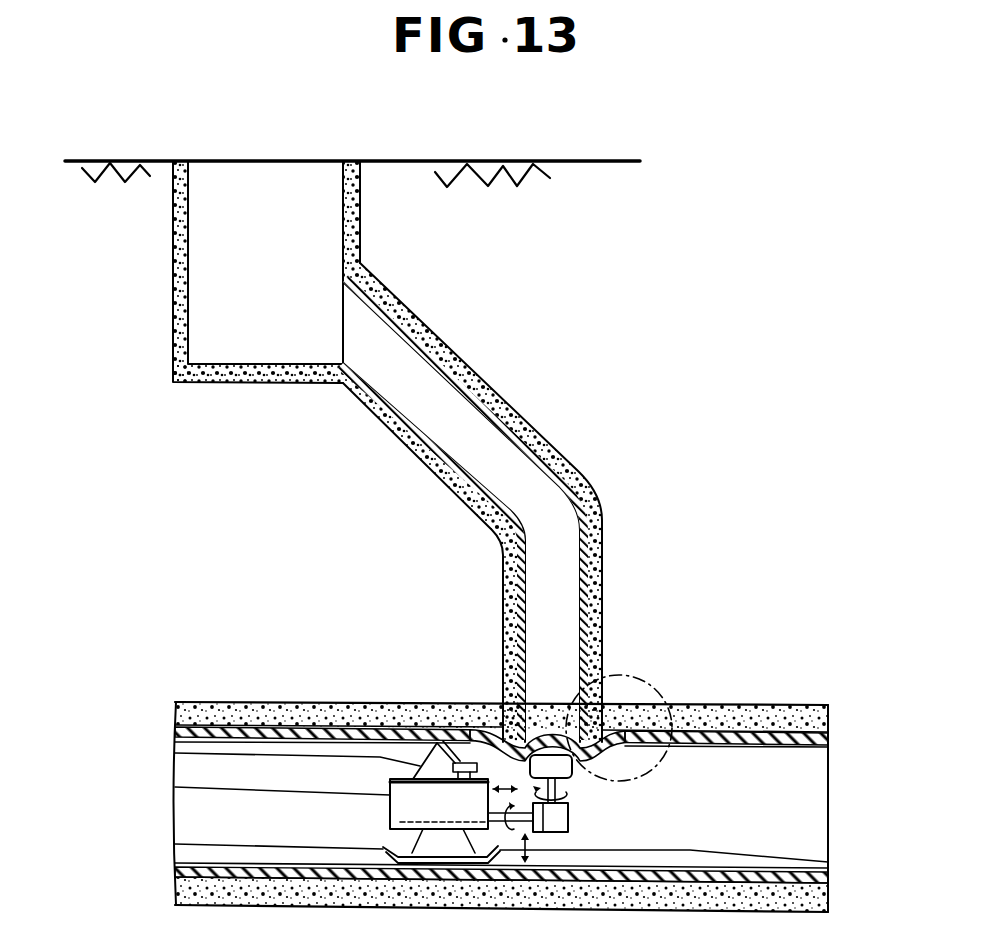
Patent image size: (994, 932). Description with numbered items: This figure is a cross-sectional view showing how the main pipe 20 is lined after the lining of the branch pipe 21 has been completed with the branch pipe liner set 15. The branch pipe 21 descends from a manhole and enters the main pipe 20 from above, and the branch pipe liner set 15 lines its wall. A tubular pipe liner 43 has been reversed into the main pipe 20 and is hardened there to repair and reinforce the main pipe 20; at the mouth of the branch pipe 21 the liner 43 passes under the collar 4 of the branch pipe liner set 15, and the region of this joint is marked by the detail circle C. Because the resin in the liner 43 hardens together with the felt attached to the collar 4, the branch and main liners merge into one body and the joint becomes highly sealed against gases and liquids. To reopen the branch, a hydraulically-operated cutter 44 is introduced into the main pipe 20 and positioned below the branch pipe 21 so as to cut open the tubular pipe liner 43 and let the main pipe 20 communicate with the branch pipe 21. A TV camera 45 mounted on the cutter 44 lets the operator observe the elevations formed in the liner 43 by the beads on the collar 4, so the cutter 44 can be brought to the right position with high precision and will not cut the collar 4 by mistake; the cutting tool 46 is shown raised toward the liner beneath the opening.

The branch pipe 21 is at (603, 523).
The branch pipe liner set 15 is at (572, 597).
The main pipe 20 is at (763, 702).
The tubular pipe liner 43 is at (728, 748).
The collar 4 is at (628, 777).
The detail region at lateral connection C is at (634, 675).
The hydraulically-operated cutter 44 is at (410, 806).
The TV camera 45 is at (445, 745).
The cutter 46 is at (578, 774).